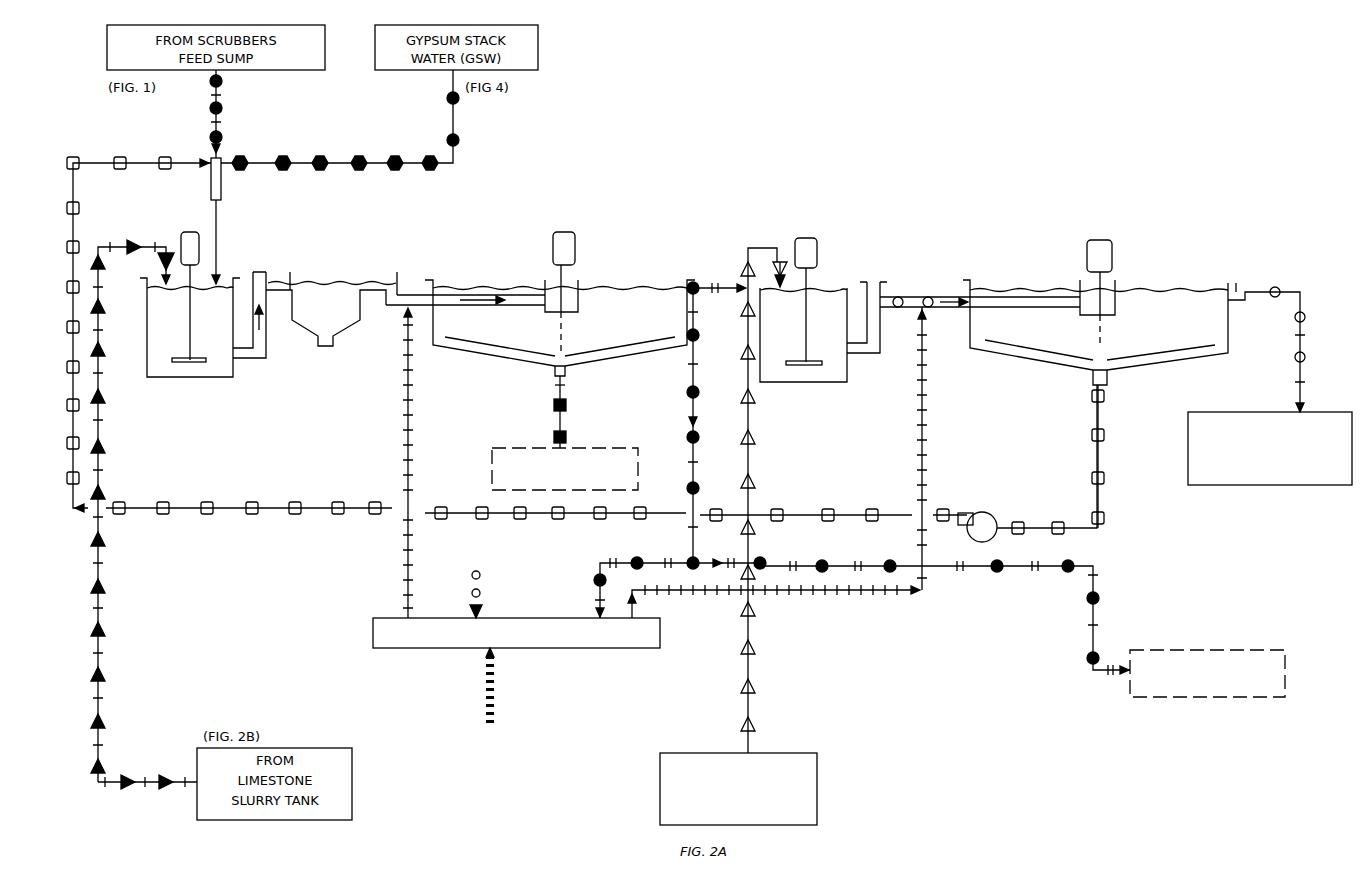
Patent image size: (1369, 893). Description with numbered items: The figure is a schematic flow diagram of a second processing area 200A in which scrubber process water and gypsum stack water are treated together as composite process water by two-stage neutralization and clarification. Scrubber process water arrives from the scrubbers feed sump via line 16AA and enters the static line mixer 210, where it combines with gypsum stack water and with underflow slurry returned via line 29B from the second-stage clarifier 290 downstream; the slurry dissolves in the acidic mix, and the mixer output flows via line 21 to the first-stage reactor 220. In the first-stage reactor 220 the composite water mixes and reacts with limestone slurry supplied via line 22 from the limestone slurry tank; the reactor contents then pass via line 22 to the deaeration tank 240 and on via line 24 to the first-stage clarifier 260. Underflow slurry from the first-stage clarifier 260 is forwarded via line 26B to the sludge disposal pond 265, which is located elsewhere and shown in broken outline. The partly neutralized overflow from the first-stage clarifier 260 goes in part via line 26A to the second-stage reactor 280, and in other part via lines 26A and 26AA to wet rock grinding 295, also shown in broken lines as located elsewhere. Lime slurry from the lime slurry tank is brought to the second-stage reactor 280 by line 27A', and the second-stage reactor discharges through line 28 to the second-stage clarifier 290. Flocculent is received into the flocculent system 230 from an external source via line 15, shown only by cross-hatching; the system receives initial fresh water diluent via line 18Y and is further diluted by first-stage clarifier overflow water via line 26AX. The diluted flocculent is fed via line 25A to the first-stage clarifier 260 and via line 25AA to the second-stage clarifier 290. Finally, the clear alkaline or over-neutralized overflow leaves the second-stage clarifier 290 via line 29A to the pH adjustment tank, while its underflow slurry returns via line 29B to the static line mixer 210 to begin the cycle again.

The line 16AA is at (245, 80).
The static line mixer 210 is at (210, 180).
The line 21 is at (215, 218).
The line 29B is at (160, 168).
The stage 1 reactor 220 is at (148, 380).
The line 22 is at (272, 348).
The deaeration tank 240 is at (350, 332).
The line 24 is at (478, 295).
The line 25A is at (406, 546).
The stage 1 clarifier 260 is at (488, 358).
The line 26B is at (553, 407).
The sludge disposal pond 265 is at (497, 448).
The line 26A is at (704, 284).
The line 26AA is at (690, 362).
The wet rock grinding 295 is at (1130, 680).
The line 26AX is at (598, 572).
The lime slurry feed line 27A' is at (738, 519).
The stage 2 reactor 280 is at (852, 384).
The transfer line to stage 2 clarifier 28 is at (908, 297).
The line 25AA is at (790, 592).
The stage 2 clarifier 290 is at (1035, 358).
The line 29A is at (1292, 292).
The second processing area 200A is at (645, 226).
The flocculent system 230 is at (373, 648).
The line 15 is at (494, 684).
The line 18Y is at (482, 578).